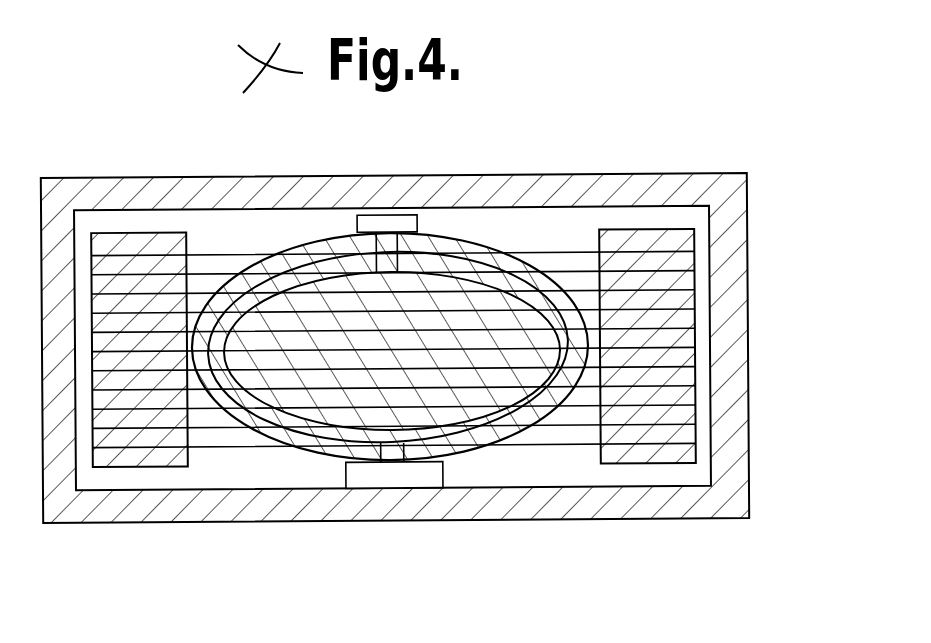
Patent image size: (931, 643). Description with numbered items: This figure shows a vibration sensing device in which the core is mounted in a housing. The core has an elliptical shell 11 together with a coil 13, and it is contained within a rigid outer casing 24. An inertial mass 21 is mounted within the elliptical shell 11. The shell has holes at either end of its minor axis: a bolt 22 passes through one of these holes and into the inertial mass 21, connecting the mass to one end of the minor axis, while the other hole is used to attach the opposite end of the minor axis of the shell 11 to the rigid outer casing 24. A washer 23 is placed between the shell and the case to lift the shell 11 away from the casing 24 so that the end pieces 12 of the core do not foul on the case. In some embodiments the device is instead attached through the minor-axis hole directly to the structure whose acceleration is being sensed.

The elliptical shell 11 is at (328, 238).
The end pieces 12 is at (683, 217).
The coil 13 is at (225, 450).
The inertial mass 21 is at (500, 432).
The bolt 22 is at (408, 220).
The washer 23 is at (345, 462).
The outer casing 24 is at (748, 435).